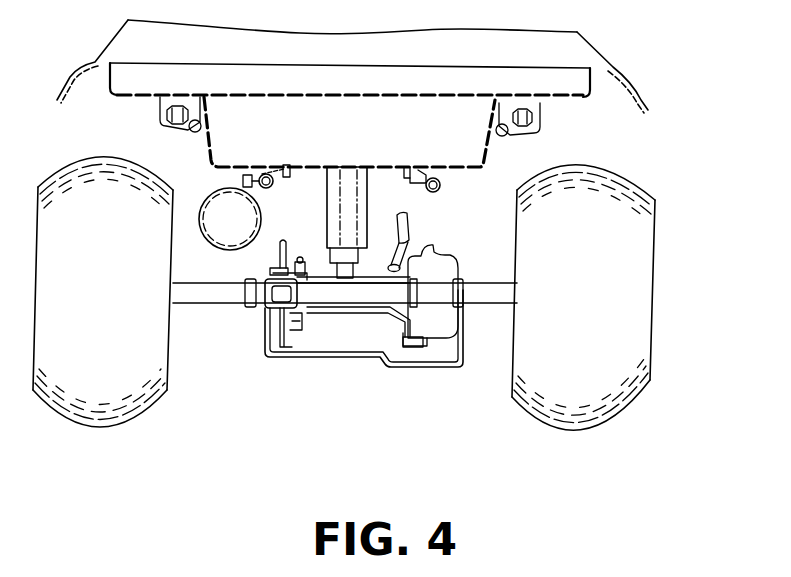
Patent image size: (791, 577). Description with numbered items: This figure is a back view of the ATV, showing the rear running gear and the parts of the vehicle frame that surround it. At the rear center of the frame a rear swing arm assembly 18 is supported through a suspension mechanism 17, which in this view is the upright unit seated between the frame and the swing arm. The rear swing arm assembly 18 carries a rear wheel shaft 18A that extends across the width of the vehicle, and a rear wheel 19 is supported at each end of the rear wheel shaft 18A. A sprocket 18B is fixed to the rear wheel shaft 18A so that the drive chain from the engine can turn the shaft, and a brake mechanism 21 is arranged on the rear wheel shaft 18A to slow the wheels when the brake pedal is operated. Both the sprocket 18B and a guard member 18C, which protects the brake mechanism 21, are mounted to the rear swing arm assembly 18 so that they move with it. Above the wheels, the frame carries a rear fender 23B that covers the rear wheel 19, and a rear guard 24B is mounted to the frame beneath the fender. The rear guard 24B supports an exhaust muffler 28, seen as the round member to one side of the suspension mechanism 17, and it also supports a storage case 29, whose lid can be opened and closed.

The rear fender 23B is at (652, 104).
The storage case 29 is at (203, 157).
The exhaust muffler 28 is at (213, 188).
The rear guard 24B is at (272, 190).
The suspension mechanism 17 is at (372, 193).
The brake mechanism 21 is at (435, 260).
The rear swing arm assembly 18 is at (333, 368).
The rear wheel shaft 18A is at (207, 293).
The sprocket 18B is at (293, 335).
The guard member 18C is at (413, 368).
The rear wheel 19 is at (167, 362).